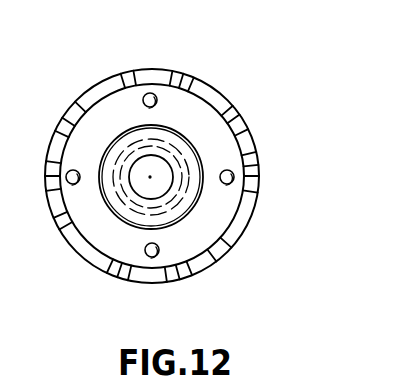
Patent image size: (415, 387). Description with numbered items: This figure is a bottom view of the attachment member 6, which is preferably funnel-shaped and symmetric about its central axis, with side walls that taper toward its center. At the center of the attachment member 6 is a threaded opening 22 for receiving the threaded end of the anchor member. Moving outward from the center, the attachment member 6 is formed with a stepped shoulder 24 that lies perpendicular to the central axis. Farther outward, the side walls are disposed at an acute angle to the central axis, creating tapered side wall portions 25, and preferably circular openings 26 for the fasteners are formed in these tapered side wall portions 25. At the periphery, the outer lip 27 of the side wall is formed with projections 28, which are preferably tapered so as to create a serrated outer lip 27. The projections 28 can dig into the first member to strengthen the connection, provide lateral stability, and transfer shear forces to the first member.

The attachment member 6 is at (250, 120).
The threaded opening 22 is at (165, 164).
The stepped shoulder 24 is at (127, 138).
The tapered side wall portions 25 is at (207, 213).
The openings 26 is at (158, 95).
The outer lip 27 is at (213, 257).
The projections 28 is at (124, 78).